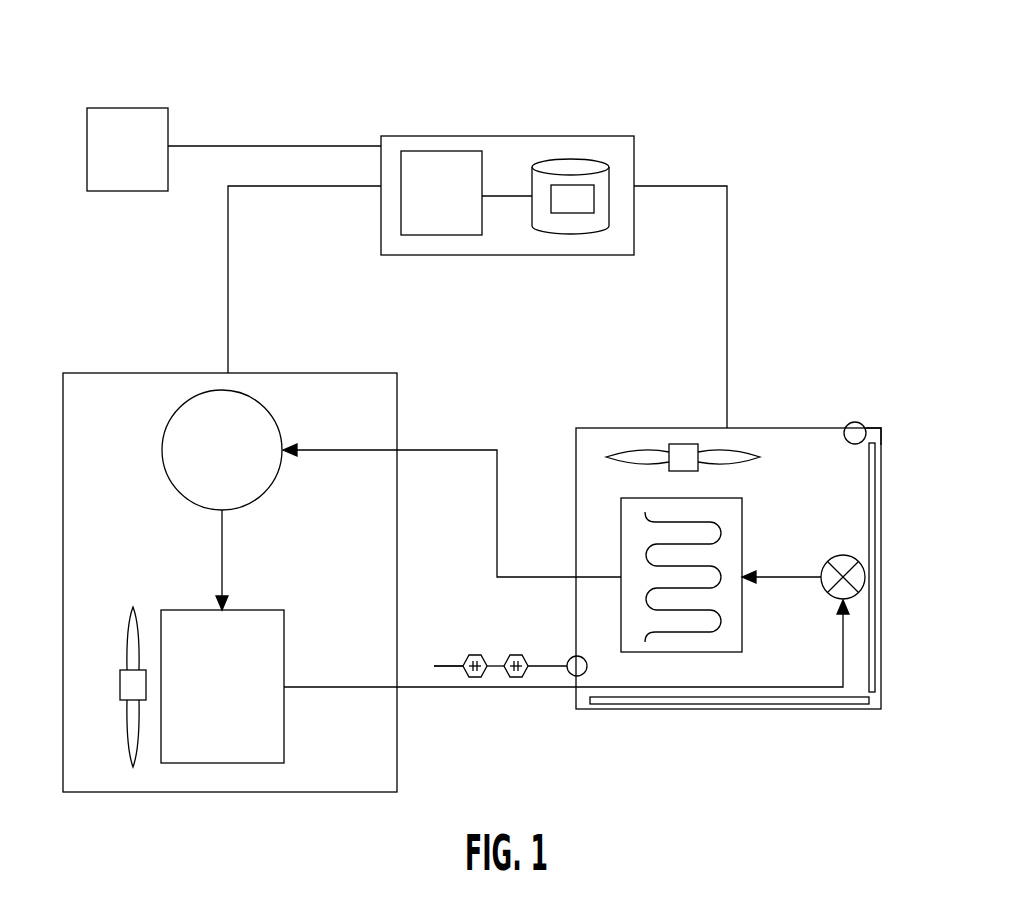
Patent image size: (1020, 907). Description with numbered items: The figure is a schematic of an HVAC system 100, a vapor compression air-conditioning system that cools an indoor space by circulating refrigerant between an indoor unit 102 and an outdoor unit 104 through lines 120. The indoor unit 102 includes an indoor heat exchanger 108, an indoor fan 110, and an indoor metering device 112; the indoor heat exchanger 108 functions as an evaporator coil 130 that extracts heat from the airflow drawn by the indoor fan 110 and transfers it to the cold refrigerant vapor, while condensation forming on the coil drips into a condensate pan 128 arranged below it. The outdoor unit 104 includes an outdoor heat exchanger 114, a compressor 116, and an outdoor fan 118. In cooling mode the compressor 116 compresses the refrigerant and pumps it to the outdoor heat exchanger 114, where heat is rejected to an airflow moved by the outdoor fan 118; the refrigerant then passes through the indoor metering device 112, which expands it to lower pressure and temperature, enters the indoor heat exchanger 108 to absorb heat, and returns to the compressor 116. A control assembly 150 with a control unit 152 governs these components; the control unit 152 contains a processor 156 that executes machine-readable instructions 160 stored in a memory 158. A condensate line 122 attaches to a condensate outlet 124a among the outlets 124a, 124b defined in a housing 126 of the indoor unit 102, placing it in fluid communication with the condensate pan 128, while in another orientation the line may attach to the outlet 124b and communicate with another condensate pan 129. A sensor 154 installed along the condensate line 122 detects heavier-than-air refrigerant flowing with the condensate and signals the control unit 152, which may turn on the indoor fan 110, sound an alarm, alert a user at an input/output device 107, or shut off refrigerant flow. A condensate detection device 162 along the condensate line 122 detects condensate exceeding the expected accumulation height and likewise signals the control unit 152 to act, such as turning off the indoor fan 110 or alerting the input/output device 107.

The HVAC system 100 is at (81, 303).
The indoor unit 102 is at (756, 384).
The outdoor unit 104 is at (63, 405).
The input/output device 107 is at (128, 108).
The indoor heat exchanger 108 is at (742, 535).
The indoor fan 110 is at (770, 457).
The indoor metering device 112 is at (843, 555).
The outdoor heat exchanger 114 is at (263, 608).
The compressor 116 is at (162, 458).
The outdoor fan 118 is at (133, 607).
The lines 120 is at (440, 447).
The condensate line 122 is at (452, 664).
The condensate outlet 124a is at (579, 680).
The condensate outlet 124b is at (855, 410).
The housing 126 is at (880, 428).
The condensate pan 128 is at (843, 704).
The condensate pan 129 is at (872, 660).
The evaporator coil 130 is at (693, 636).
The control assembly 150 is at (321, 70).
The control unit 152 is at (425, 136).
The sensor 154 is at (516, 655).
The processor 156 is at (445, 236).
The memory 158 is at (567, 160).
The machine-readable instructions 160 is at (577, 202).
The condensate detection device 162 is at (476, 678).